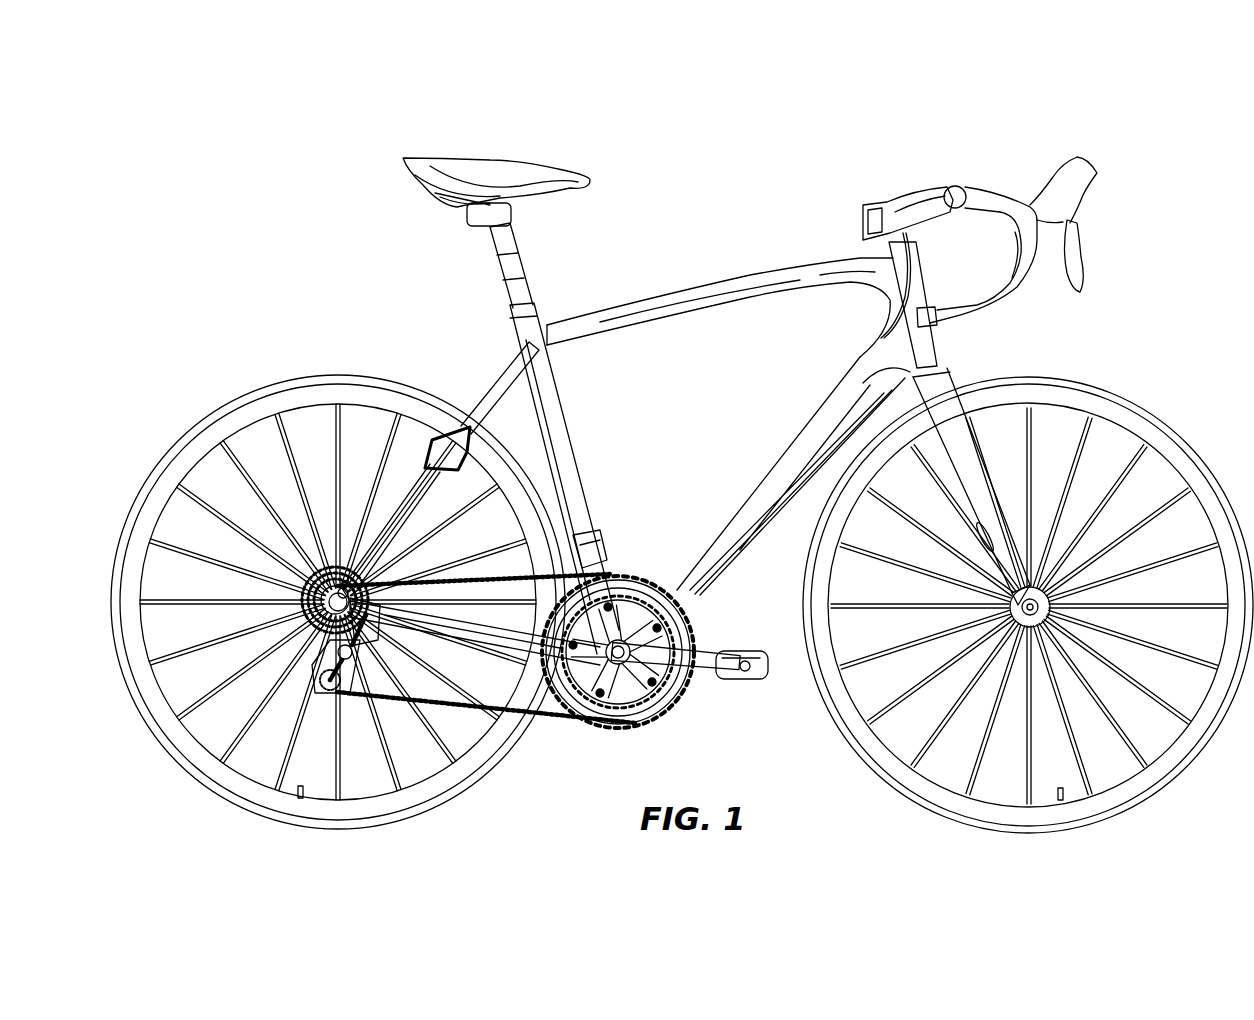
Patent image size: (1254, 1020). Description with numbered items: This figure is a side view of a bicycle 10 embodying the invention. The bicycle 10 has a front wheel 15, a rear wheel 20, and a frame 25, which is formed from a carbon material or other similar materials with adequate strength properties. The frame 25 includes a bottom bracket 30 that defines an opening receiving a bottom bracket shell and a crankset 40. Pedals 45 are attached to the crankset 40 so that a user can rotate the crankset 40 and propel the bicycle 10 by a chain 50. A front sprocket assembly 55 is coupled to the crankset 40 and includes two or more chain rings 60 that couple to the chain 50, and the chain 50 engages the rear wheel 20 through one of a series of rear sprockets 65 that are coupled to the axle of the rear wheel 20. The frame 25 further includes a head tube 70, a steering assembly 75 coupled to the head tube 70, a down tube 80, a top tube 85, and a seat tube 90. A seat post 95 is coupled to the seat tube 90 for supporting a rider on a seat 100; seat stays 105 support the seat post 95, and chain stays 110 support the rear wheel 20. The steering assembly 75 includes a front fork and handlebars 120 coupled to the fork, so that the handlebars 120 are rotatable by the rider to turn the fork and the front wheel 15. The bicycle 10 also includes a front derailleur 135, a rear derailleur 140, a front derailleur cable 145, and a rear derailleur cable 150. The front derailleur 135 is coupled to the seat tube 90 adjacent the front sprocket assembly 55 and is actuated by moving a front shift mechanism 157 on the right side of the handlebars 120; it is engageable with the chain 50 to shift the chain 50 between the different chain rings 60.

The bicycle 10 is at (798, 78).
The front wheel 15 is at (1170, 438).
The rear wheel 20 is at (197, 433).
The frame 25 is at (542, 333).
The bottom bracket 30 is at (637, 703).
The crankset 40 is at (660, 628).
The pedals 45 is at (767, 667).
The chain 50 is at (560, 725).
The front sprocket assembly 55 is at (613, 613).
The chain rings 60 is at (650, 690).
The rear sprockets 65 is at (318, 612).
The head tube 70 is at (890, 268).
The steering assembly 75 is at (927, 190).
The down tube 80 is at (770, 473).
The top tube 85 is at (702, 292).
The seat tube 90 is at (578, 425).
The seat post 95 is at (512, 265).
The seat 100 is at (537, 168).
The seat stays 105 is at (505, 377).
The chain stays 110 is at (486, 631).
The handlebars 120 is at (1008, 278).
The front derailleur 135 is at (600, 547).
The rear derailleur 140 is at (352, 690).
The front derailleur cable 145 is at (907, 243).
The rear derailleur cable 150 is at (905, 273).
The front shift mechanism 157 is at (1067, 258).